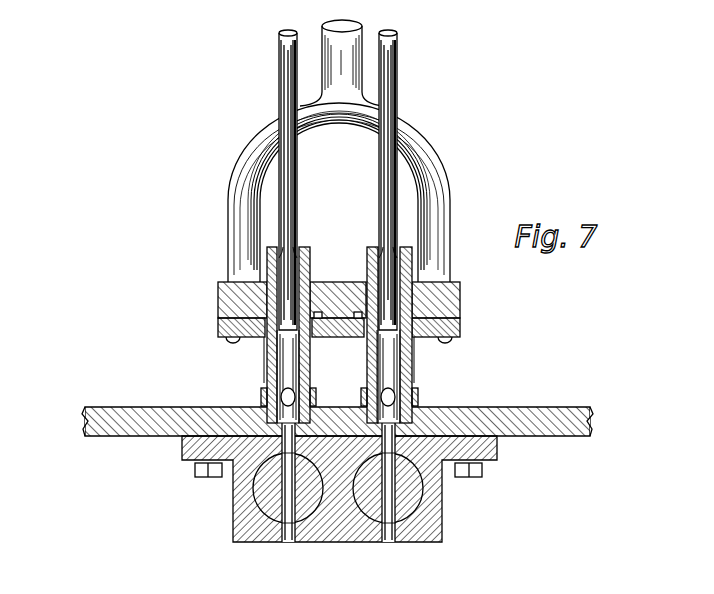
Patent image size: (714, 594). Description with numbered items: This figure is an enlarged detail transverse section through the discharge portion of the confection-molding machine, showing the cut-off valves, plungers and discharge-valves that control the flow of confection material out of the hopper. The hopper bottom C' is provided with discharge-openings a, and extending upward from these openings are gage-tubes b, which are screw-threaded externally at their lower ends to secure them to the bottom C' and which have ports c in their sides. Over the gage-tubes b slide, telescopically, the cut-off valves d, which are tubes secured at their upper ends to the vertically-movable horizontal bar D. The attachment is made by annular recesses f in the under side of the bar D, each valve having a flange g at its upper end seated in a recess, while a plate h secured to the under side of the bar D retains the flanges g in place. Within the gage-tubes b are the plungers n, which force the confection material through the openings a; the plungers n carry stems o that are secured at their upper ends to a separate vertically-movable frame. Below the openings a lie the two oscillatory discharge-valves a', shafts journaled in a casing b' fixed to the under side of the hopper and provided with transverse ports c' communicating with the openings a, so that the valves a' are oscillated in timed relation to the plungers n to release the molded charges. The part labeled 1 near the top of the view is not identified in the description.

The loop tube with central pipe 1 is at (358, 37).
The stems o is at (279, 77).
The plungers n is at (378, 262).
The annular recesses f is at (319, 313).
The flange g is at (359, 313).
The vertically-movable horizontal bar D is at (479, 291).
The plate h is at (463, 322).
The gage-tubes b is at (337, 376).
The cut-off valves d is at (266, 373).
The discharge-openings a is at (344, 397).
The ports c is at (338, 396).
The bottom C' is at (337, 405).
The oscillatory discharge-valves a' is at (340, 488).
The transverse ports c' is at (339, 499).
The casing b' is at (339, 506).